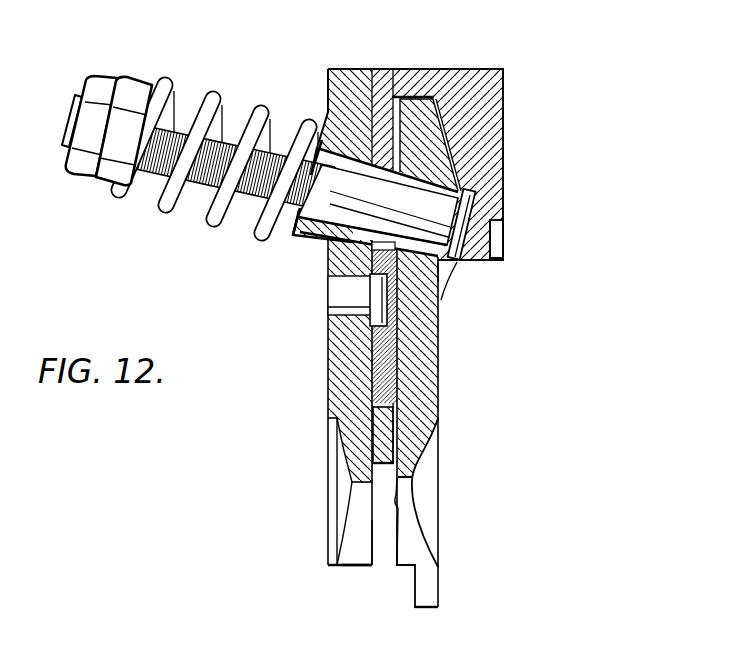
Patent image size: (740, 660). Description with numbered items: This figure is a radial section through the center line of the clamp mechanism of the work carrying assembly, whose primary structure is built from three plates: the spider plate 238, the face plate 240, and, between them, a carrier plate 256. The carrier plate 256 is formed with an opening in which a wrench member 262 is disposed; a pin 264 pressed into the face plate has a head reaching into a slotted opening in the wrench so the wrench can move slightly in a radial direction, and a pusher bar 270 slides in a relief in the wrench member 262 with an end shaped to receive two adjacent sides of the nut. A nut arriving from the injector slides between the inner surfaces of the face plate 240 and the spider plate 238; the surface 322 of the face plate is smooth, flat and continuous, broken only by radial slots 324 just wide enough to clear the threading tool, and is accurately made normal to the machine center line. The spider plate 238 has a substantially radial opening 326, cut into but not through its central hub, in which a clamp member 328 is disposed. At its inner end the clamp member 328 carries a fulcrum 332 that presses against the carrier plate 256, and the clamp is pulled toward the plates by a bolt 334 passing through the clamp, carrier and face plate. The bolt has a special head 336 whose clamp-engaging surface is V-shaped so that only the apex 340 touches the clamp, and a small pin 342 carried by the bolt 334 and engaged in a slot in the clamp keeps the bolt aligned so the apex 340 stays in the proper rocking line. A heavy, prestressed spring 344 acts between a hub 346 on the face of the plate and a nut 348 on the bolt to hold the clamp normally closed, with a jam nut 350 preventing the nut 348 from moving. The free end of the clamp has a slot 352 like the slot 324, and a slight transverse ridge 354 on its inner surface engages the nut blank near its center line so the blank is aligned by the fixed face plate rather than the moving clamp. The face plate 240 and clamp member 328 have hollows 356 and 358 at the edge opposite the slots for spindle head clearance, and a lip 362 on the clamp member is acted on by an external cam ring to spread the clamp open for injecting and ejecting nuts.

The spider plate 238 is at (432, 78).
The face plate 240 is at (338, 383).
The carrier plate 256 is at (381, 75).
The wrench member 262 is at (381, 365).
The pin 264 is at (343, 303).
The pusher bar 270 is at (390, 437).
The surface 322 is at (378, 546).
The radial slot 324 is at (350, 555).
The opening 326 is at (439, 272).
The clamp member 328 is at (425, 340).
The fulcrum 332 is at (404, 100).
The bolt 334 is at (355, 200).
The head 336 is at (497, 220).
The apex 340 is at (470, 222).
The pin 342 is at (455, 265).
The spring 344 is at (212, 223).
The hub 346 is at (296, 238).
The nut 348 is at (113, 178).
The jam nut 350 is at (73, 168).
The slot 352 is at (412, 553).
The transverse ridge 354 is at (398, 492).
The hollow 356 is at (347, 527).
The hollow 358 is at (420, 450).
The lip 362 is at (428, 598).